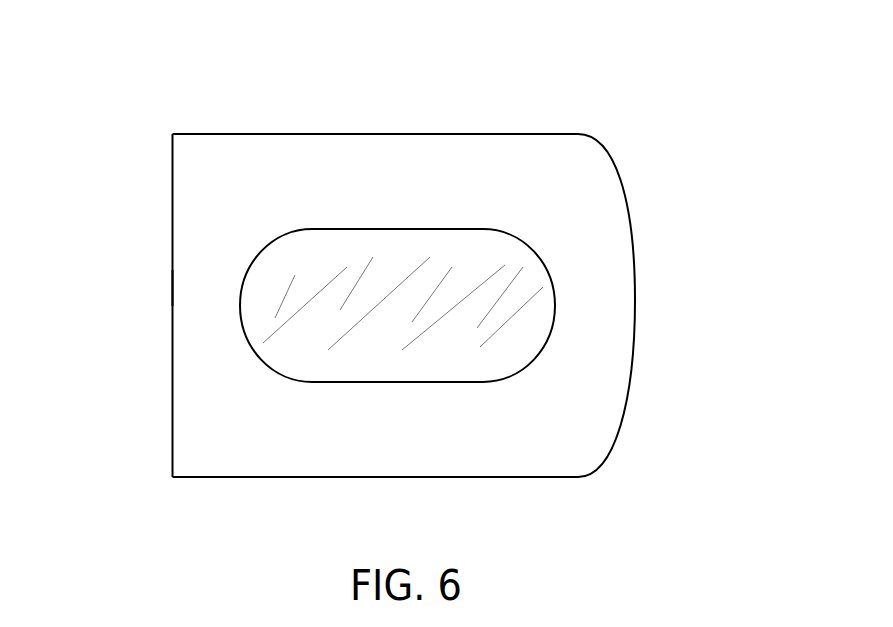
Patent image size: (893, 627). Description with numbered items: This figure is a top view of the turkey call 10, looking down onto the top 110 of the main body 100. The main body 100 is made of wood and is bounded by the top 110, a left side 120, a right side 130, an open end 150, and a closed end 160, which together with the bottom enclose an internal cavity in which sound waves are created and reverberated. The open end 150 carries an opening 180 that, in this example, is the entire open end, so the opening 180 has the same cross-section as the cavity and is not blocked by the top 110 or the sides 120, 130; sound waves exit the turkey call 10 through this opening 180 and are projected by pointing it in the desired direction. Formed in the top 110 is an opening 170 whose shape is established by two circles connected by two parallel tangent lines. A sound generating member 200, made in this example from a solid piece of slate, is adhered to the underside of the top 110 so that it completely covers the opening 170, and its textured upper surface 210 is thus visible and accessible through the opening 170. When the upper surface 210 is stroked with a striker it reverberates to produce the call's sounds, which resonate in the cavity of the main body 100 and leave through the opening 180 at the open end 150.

The turkey call 10 is at (640, 111).
The main body 100 is at (527, 165).
The top 110 is at (395, 165).
The left side 120 is at (251, 134).
The right side 130 is at (454, 478).
The open end 150 is at (172, 432).
The closed end 160 is at (634, 345).
The opening 170 is at (525, 278).
The opening 180 is at (160, 288).
The sound generating member 200 is at (363, 373).
The upper surface 210 is at (431, 368).